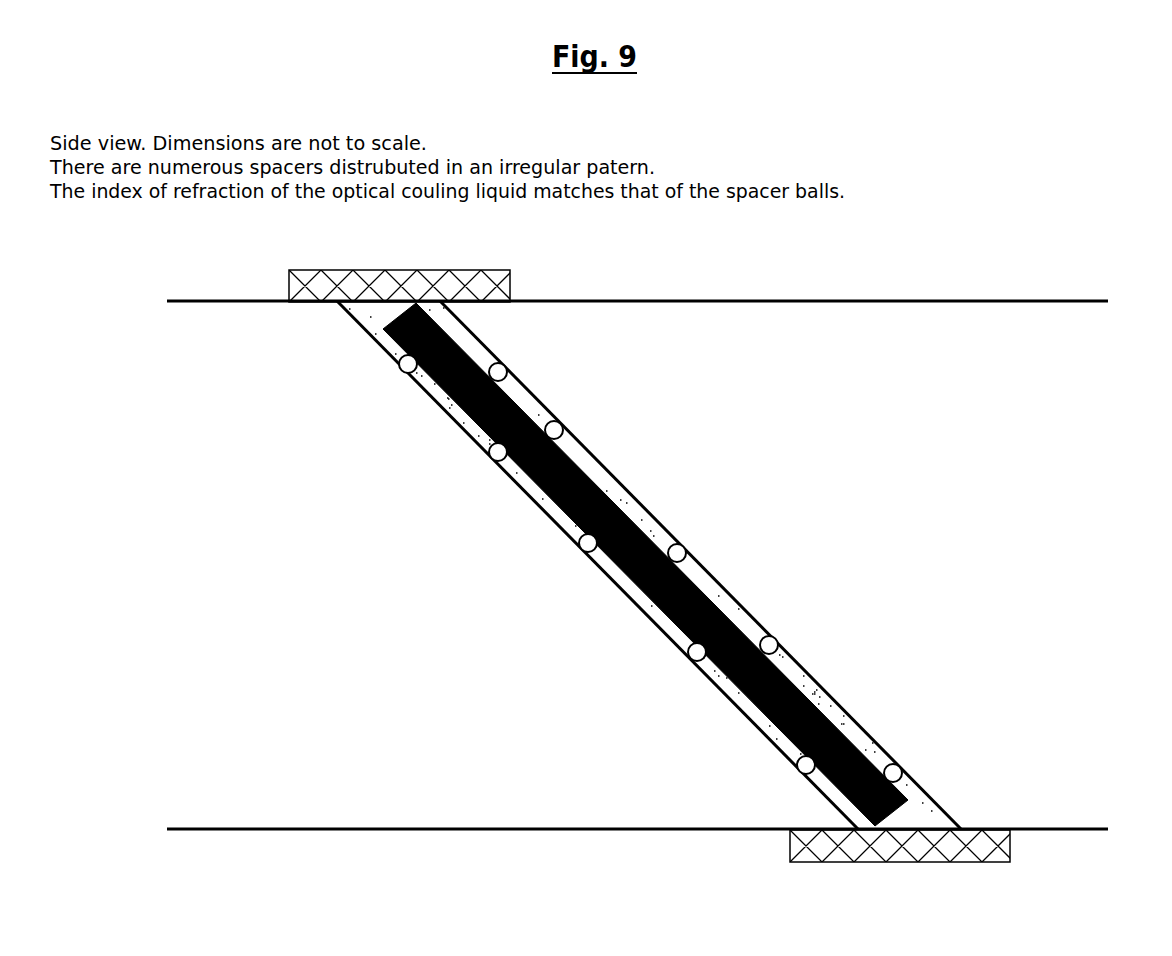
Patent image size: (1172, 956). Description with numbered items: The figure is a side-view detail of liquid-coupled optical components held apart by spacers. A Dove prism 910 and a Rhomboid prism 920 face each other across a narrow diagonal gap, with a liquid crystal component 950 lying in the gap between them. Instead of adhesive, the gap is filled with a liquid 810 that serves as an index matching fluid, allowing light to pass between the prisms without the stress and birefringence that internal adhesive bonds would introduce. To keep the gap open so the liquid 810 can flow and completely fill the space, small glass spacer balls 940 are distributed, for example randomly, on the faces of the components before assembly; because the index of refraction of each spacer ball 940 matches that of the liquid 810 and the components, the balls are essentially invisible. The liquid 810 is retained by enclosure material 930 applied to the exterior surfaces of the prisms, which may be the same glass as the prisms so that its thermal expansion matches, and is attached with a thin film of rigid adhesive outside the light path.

The liquid 810 is at (538, 501).
The Dove prism 910 is at (637, 798).
The Rhomboid prism 920 is at (638, 349).
The enclosure material 930 is at (514, 284).
The spacer ball 940 is at (396, 351).
The liquid crystal component 950 is at (810, 703).